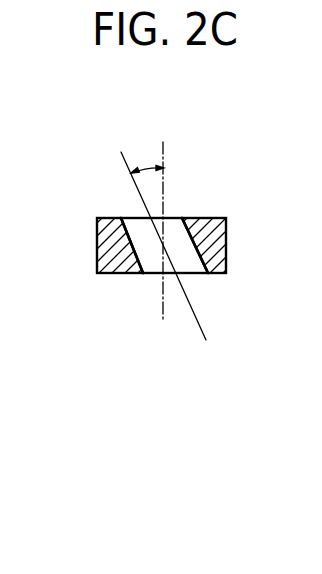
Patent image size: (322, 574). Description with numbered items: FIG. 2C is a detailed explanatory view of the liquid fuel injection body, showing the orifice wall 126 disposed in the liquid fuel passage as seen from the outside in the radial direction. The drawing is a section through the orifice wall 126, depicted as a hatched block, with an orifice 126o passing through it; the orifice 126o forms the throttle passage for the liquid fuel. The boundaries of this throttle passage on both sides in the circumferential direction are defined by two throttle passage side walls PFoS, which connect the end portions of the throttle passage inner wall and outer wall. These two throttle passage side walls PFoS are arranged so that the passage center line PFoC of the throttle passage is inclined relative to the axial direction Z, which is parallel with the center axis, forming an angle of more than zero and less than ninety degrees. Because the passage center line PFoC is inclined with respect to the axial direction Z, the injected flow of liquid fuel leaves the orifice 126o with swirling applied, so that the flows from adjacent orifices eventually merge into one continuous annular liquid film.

The orifice wall 126 is at (117, 255).
The orifice 126o is at (173, 242).
The throttle passage side wall PFoS is at (133, 240).
The passage center line PFoC is at (139, 225).
The axial direction Z is at (161, 216).